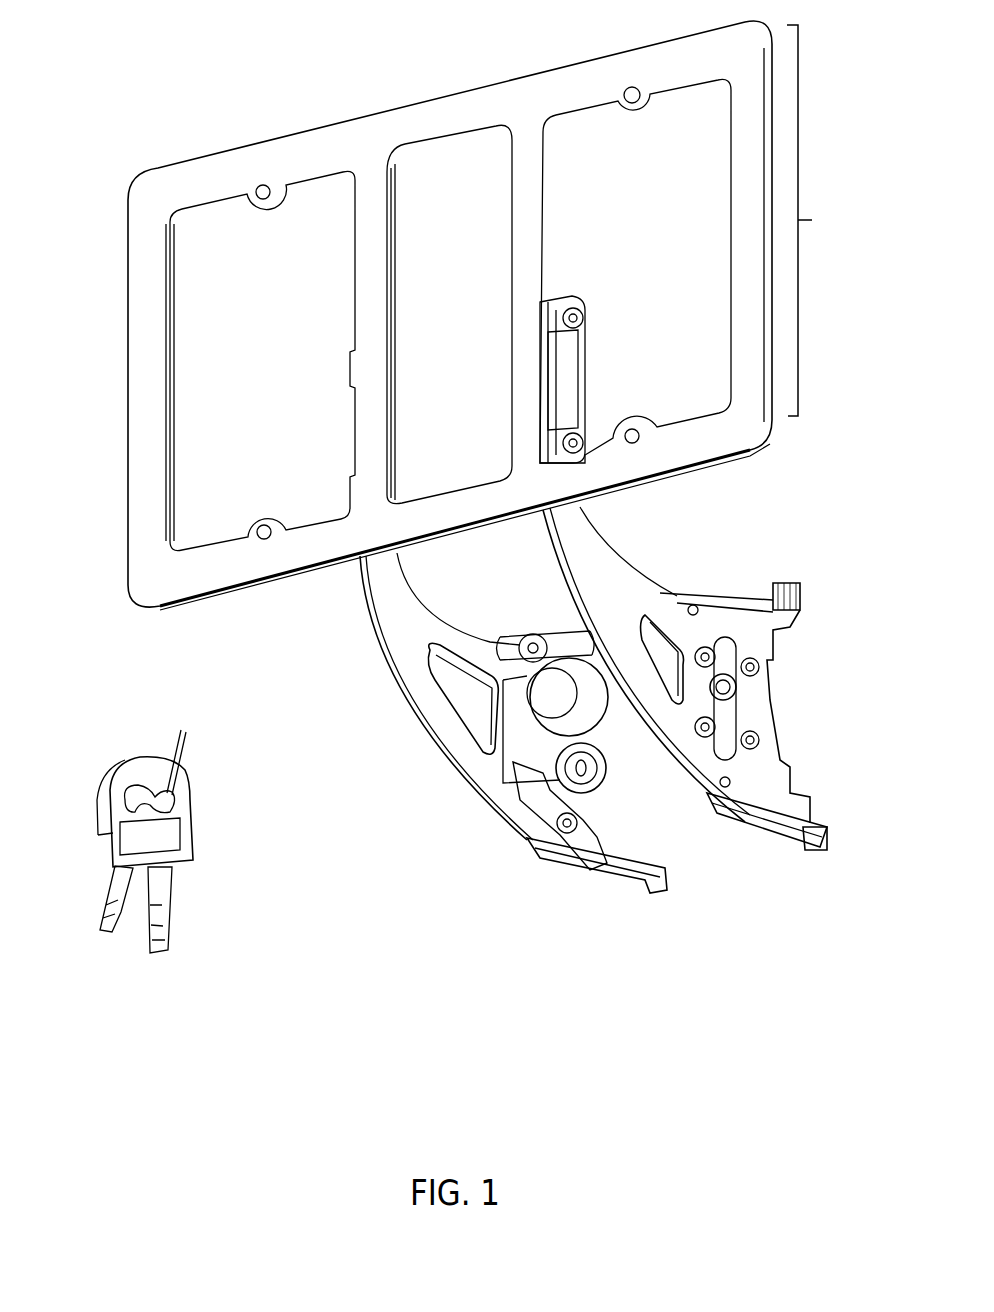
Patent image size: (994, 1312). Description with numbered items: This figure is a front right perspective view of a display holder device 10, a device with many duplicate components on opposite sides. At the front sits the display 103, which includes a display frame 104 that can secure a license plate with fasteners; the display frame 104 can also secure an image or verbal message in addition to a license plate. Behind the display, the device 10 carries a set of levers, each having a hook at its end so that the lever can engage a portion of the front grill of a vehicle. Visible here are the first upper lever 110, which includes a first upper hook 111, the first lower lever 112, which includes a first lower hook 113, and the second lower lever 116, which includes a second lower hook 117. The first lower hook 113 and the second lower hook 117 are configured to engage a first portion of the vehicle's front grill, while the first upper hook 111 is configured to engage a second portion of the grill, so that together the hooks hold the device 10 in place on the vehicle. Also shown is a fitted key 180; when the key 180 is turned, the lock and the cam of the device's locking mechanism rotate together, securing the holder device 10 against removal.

The display holder device 10 is at (417, 917).
The display 103 is at (368, 222).
The display frame 104 is at (830, 220).
The first upper lever 110 is at (742, 600).
The first upper hook 111 is at (795, 583).
The first lower lever 112 is at (762, 830).
The first lower hook 113 is at (828, 840).
The second lower lever 116 is at (588, 867).
The second lower hook 117 is at (667, 887).
The key 180 is at (157, 882).